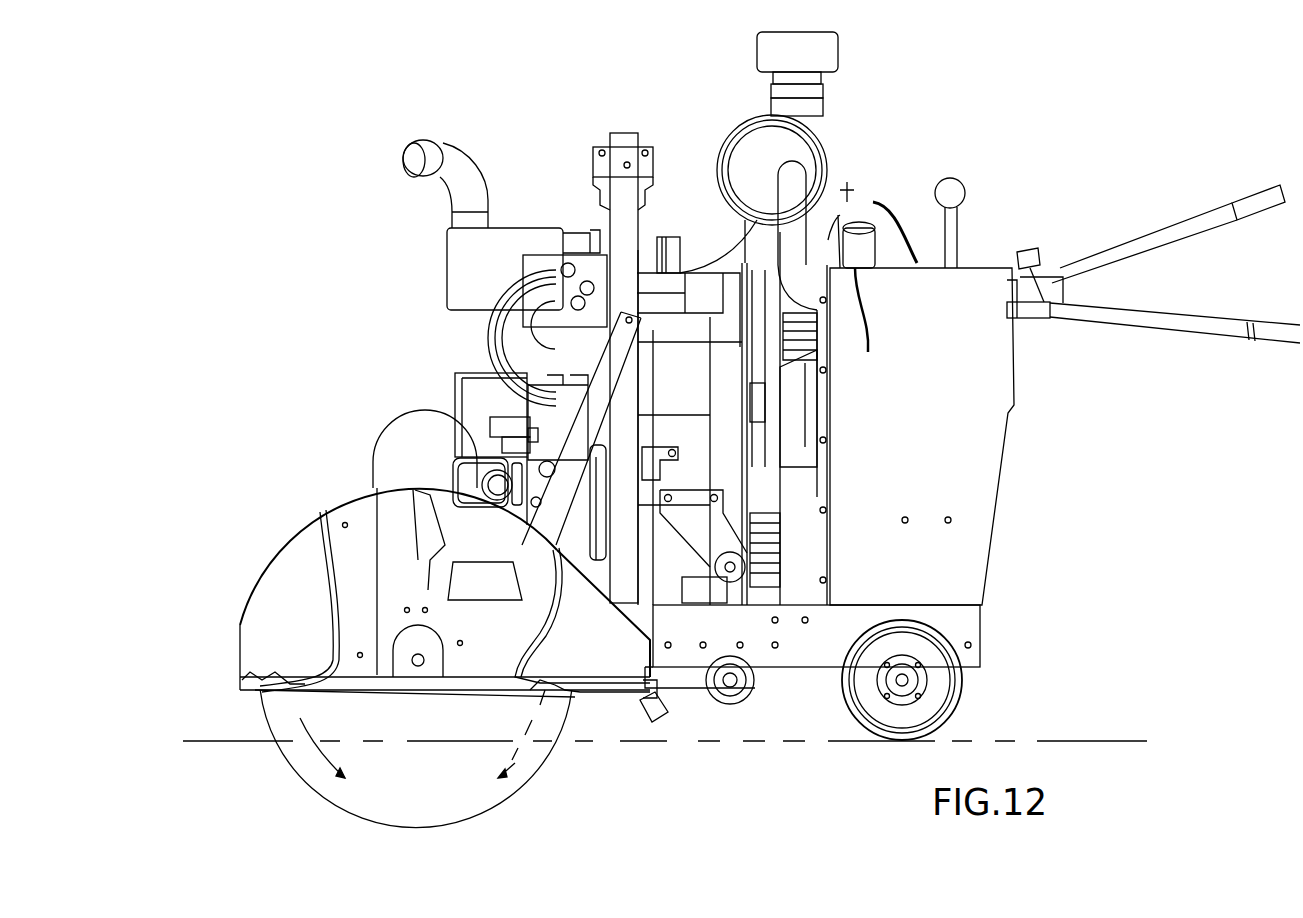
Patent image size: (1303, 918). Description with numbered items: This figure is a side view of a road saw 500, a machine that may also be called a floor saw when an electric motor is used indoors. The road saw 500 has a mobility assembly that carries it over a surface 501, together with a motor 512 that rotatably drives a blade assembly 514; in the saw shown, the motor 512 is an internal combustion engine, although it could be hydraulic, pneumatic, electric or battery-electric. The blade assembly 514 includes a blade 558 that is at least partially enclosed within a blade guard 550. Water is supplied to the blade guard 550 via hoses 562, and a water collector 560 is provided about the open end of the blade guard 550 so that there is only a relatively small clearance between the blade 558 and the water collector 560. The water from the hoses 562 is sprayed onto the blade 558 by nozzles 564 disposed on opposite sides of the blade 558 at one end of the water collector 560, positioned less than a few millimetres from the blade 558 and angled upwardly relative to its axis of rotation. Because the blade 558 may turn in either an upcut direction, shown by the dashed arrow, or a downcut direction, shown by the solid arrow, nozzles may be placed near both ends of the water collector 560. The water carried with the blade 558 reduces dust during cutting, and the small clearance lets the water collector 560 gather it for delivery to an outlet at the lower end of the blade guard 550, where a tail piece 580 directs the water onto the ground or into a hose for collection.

The road saw 500 is at (962, 126).
The motor 512 is at (547, 151).
The blade assembly 514 is at (240, 625).
The blade guard 550 is at (297, 565).
The blade 558 is at (480, 787).
The water collector 560 is at (402, 690).
The hoses 562 is at (333, 655).
The nozzles 564 is at (250, 686).
The tail piece 580 is at (667, 707).
The surface 501 is at (1093, 743).